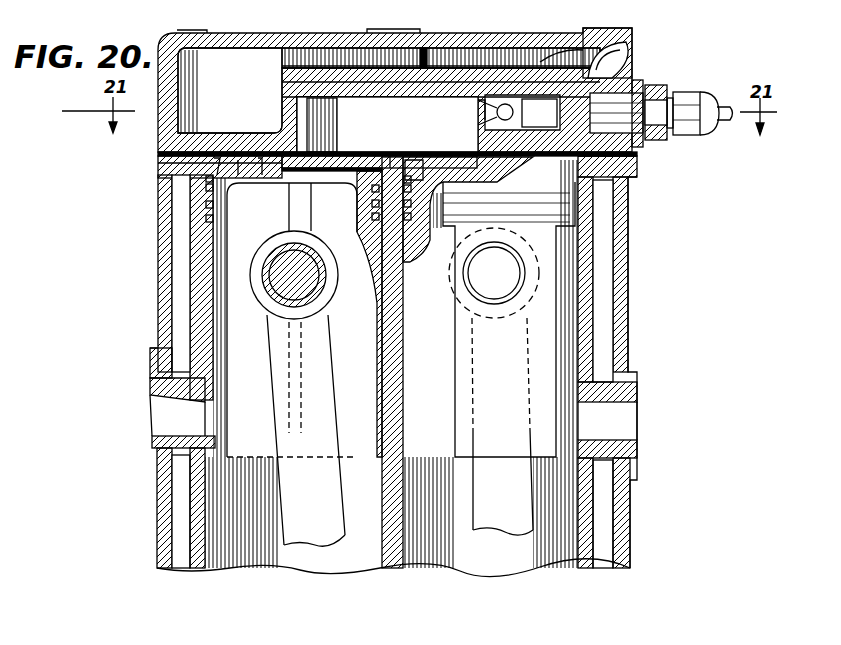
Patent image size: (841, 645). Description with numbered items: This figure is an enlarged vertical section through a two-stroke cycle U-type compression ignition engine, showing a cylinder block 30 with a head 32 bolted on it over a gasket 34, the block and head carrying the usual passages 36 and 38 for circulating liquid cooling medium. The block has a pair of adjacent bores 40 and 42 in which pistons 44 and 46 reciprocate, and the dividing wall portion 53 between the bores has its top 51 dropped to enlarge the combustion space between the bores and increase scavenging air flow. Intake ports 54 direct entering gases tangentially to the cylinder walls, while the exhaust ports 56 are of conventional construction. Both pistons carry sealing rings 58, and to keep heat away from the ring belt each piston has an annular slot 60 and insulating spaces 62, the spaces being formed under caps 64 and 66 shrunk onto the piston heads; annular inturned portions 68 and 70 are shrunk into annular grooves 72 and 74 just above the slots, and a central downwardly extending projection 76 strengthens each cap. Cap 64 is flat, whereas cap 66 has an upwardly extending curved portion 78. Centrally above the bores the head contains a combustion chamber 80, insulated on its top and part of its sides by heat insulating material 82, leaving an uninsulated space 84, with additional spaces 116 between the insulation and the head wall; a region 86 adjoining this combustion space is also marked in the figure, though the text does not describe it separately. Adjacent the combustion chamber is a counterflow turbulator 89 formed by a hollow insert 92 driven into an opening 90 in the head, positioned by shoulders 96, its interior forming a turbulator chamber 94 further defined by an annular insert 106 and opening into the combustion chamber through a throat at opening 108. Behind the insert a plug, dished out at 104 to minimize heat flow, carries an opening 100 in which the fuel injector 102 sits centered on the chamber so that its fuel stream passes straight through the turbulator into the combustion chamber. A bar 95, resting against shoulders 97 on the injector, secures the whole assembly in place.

The cylinder block 30 is at (628, 203).
The head 32 is at (548, 58).
The gasket 34 is at (633, 156).
The passages 36 is at (178, 278).
The passages 38 is at (228, 66).
The bore 40 is at (563, 511).
The bore 42 is at (215, 533).
The piston 44 is at (575, 249).
The piston 46 is at (215, 245).
The top of the dividing wall portion 51 is at (430, 70).
The dividing wall portion 53 is at (403, 314).
The intake ports 54 is at (615, 426).
The exhaust ports 56 is at (165, 416).
The sealing rings 58 is at (210, 209).
The annular slot 60 is at (205, 190).
The insulating spaces 62 is at (238, 165).
The cap 64 is at (448, 162).
The cap 66 is at (260, 163).
The annular inturned portion 68 is at (393, 167).
The annular inturned portion 70 is at (165, 172).
The annular groove 72 is at (414, 160).
The annular groove 74 is at (217, 165).
The projection 76 is at (302, 186).
The curved portion 78 is at (276, 94).
The combustion chamber 80 is at (430, 103).
The heat insulating material 82 is at (302, 82).
The space 84 is at (349, 80).
The chamber 86 is at (346, 111).
The counterflow turbulator 89 is at (604, 220).
The opening 90 is at (586, 40).
The insert 92 is at (495, 113).
The turbulator chamber 94 is at (536, 118).
The bar 95 is at (664, 90).
The shoulders 96 is at (631, 52).
The shoulders 97 is at (668, 140).
The opening 100 is at (633, 148).
The fuel injector 102 is at (660, 110).
The dished out portion 104 is at (582, 122).
The annular insert 106 is at (646, 86).
The opening 108 is at (480, 100).
The spaces 116 is at (425, 57).